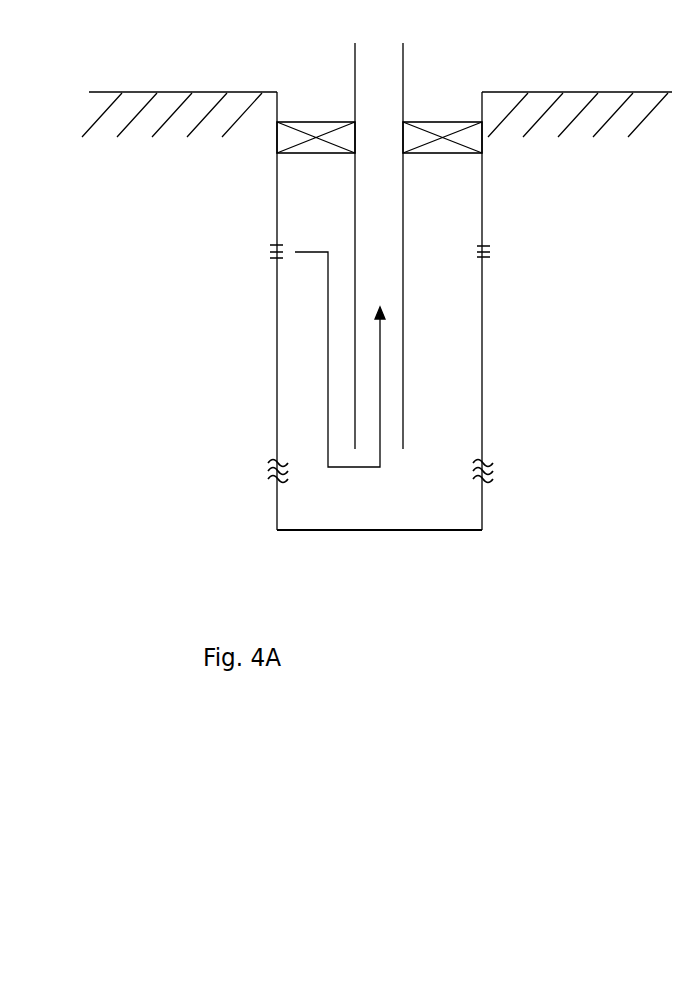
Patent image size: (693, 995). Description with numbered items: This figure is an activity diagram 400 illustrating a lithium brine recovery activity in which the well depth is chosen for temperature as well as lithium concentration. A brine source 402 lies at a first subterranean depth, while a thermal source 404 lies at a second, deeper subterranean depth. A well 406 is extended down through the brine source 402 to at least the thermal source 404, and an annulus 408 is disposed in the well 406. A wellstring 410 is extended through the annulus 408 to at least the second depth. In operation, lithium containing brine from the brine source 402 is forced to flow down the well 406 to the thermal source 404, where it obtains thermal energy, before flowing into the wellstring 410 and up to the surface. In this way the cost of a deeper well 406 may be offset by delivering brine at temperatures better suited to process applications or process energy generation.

The activity diagram 400 is at (573, 598).
The brine source 402 is at (270, 245).
The thermal source 404 is at (263, 463).
The well 406 is at (483, 181).
The annulus 408 is at (452, 119).
The wellstring 410 is at (353, 62).